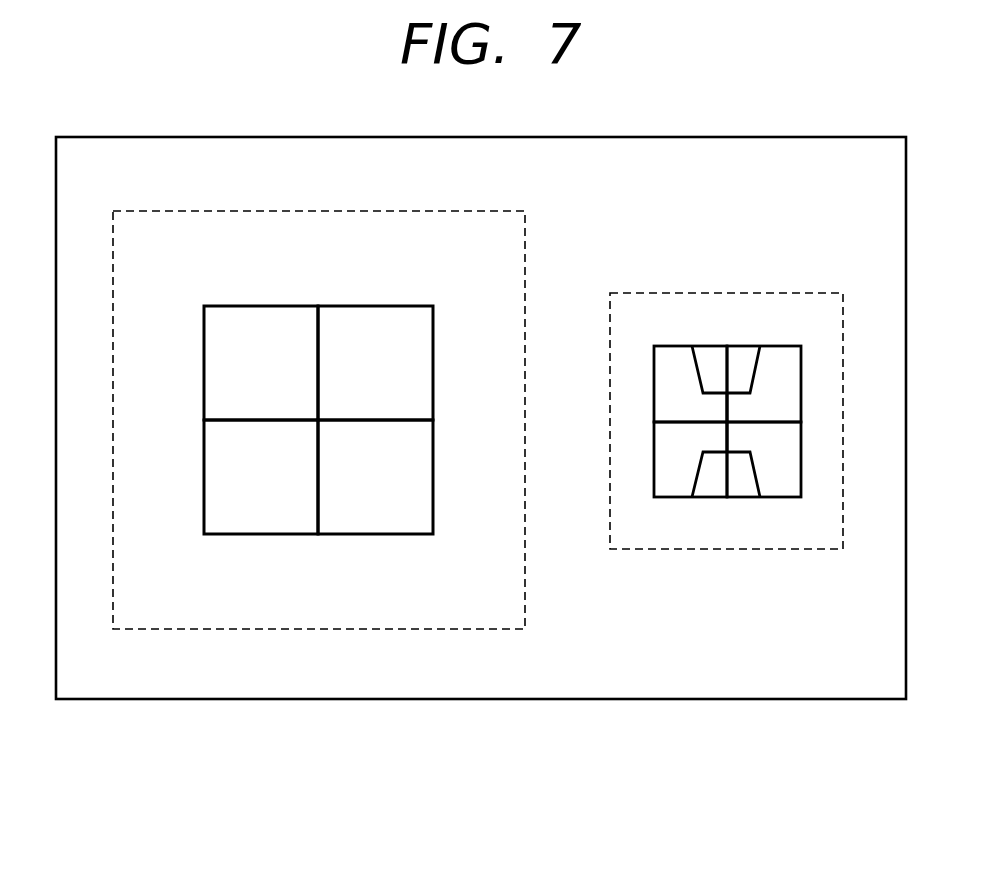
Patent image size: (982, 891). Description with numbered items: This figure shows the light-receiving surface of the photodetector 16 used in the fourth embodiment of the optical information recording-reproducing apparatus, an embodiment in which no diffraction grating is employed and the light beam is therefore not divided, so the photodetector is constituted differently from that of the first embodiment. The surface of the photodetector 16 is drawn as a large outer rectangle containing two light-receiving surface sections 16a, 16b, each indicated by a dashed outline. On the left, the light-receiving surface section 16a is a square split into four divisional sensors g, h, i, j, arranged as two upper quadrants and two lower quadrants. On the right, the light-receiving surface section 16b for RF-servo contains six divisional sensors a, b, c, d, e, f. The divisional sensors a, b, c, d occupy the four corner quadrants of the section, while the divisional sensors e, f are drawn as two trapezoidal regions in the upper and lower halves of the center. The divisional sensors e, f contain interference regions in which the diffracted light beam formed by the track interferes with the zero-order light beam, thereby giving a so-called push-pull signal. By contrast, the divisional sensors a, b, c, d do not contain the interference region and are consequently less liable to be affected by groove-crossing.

The photodetector 16 is at (155, 699).
The light-receiving surface section 16a is at (525, 598).
The light-receiving surface section for RF-servo 16b is at (748, 293).
The divisional sensor a is at (654, 355).
The divisional sensor b is at (654, 462).
The divisional sensor c is at (801, 462).
The divisional sensor d is at (801, 375).
The divisional sensor e is at (727, 349).
The divisional sensor f is at (728, 492).
The divisional sensor g is at (255, 315).
The divisional sensor h is at (250, 525).
The divisional sensor i is at (397, 525).
The divisional sensor j is at (384, 313).